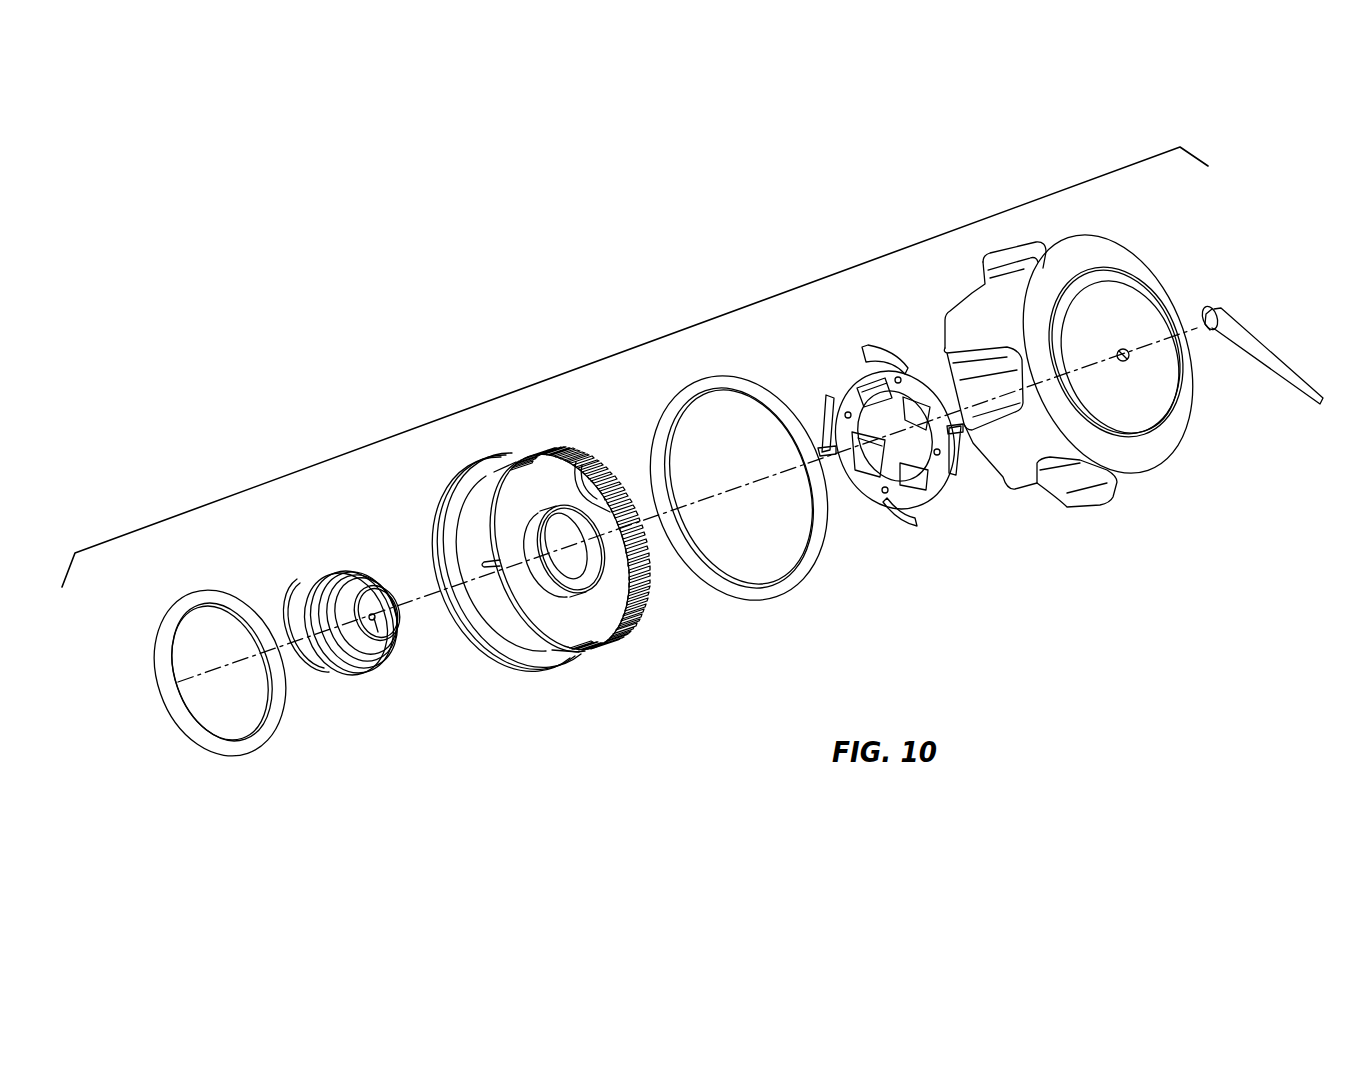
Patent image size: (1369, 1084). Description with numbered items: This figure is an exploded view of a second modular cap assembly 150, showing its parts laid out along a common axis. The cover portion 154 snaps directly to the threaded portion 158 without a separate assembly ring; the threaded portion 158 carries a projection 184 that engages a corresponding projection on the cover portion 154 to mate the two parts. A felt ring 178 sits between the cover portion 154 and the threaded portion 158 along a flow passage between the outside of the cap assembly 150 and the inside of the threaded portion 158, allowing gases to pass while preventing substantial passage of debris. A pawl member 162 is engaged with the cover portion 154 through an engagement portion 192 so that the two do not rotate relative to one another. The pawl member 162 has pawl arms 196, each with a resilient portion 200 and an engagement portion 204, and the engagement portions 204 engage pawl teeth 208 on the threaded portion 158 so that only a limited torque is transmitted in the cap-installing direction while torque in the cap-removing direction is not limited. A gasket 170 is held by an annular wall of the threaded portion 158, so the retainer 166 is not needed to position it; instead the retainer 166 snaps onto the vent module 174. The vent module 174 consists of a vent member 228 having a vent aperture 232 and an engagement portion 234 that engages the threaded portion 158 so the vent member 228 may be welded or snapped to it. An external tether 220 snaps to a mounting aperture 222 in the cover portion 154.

The cap assembly 150 is at (598, 362).
The cover portion 154 is at (1083, 377).
The threaded portion 158 is at (518, 552).
The pawl member 162 is at (882, 442).
The retainer 166 is at (297, 597).
The gasket 170 is at (170, 626).
The vent module 174 is at (330, 631).
The felt ring 178 is at (757, 590).
The projection 184 is at (452, 478).
The engagement portion 192 is at (848, 430).
The pawl arms 196 is at (822, 418).
The resilient portion 200 is at (907, 367).
The engagement portion 204 is at (862, 348).
The pawl teeth 208 is at (576, 462).
The external tether 220 is at (1270, 345).
The mounting aperture 222 is at (1130, 347).
The vent member 228 is at (338, 585).
The vent aperture 232 is at (380, 636).
The engagement portion 234 is at (325, 580).